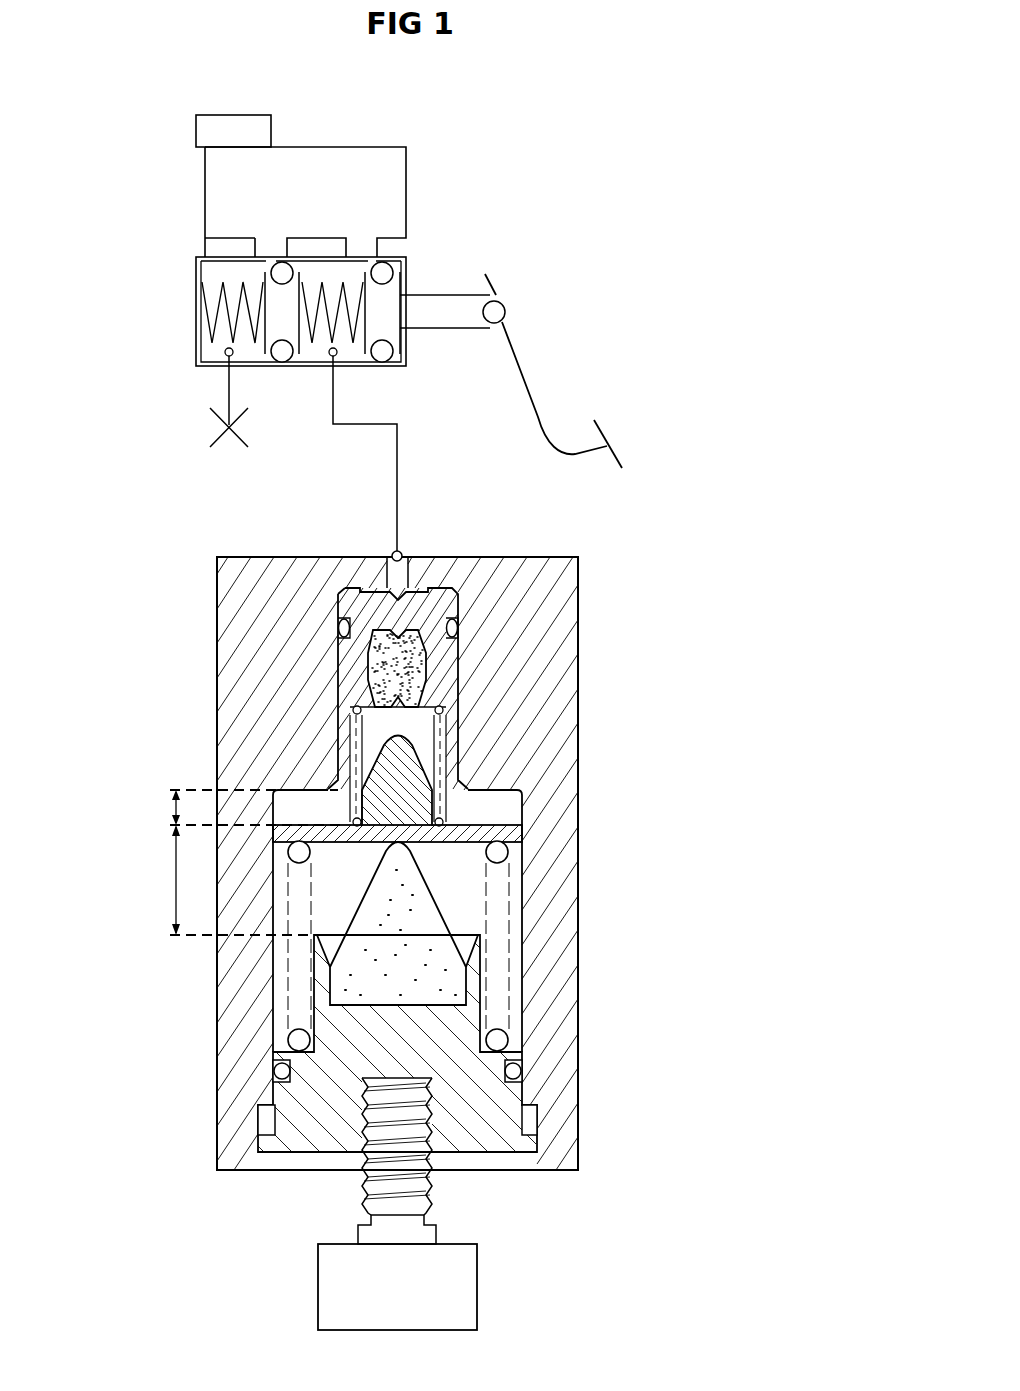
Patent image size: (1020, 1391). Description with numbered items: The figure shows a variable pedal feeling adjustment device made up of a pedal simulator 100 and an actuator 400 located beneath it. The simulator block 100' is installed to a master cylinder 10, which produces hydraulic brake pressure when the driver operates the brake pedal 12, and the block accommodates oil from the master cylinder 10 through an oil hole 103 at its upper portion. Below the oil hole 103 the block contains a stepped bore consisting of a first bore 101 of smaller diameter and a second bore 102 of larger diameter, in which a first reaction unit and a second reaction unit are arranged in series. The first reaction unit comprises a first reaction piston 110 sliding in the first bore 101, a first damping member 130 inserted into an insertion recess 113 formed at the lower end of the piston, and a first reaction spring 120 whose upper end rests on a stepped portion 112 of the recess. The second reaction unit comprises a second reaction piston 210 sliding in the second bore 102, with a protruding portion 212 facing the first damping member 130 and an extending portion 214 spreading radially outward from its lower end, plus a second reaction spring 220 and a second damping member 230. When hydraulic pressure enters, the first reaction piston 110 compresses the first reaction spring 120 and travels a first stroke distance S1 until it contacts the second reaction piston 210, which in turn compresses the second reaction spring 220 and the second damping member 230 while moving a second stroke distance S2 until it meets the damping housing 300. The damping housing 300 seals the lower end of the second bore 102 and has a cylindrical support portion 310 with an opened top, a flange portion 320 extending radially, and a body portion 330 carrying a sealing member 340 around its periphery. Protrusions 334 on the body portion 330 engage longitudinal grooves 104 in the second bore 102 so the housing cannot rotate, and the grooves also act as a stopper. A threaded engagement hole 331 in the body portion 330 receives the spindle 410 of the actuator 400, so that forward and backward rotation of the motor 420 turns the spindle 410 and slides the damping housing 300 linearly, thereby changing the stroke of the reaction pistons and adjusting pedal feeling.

The master cylinder 10 is at (196, 263).
The brake pedal 12 is at (521, 368).
The pedal simulator 100 is at (462, 838).
The simulator block 100' is at (433, 863).
The first bore 101 is at (348, 658).
The second bore 102 is at (520, 880).
The oil hole 103 is at (398, 578).
The grooves 104 is at (528, 1115).
The first reaction piston 110 is at (458, 678).
The stepped portion 112 is at (443, 693).
The insertion recess 113 is at (413, 652).
The first reaction spring 120 is at (357, 750).
The first damping member 130 is at (362, 683).
The second reaction piston 210 is at (476, 789).
The protruding portion 212 is at (425, 745).
The extending portion 214 is at (498, 826).
The second reaction spring 220 is at (497, 1028).
The second damping member 230 is at (455, 963).
The damping housing 300 is at (379, 1072).
The support portion 310 is at (318, 985).
The flange portion 320 is at (275, 1060).
The body portion 330 is at (288, 1117).
The engagement hole 331 is at (386, 1108).
The protrusions 334 is at (530, 1142).
The sealing member 340 is at (513, 1070).
The actuator 400 is at (451, 1204).
The spindle 410 is at (428, 1183).
The motor 420 is at (443, 1272).
The first stroke distance S1 is at (239, 807).
The second stroke distance S2 is at (225, 880).